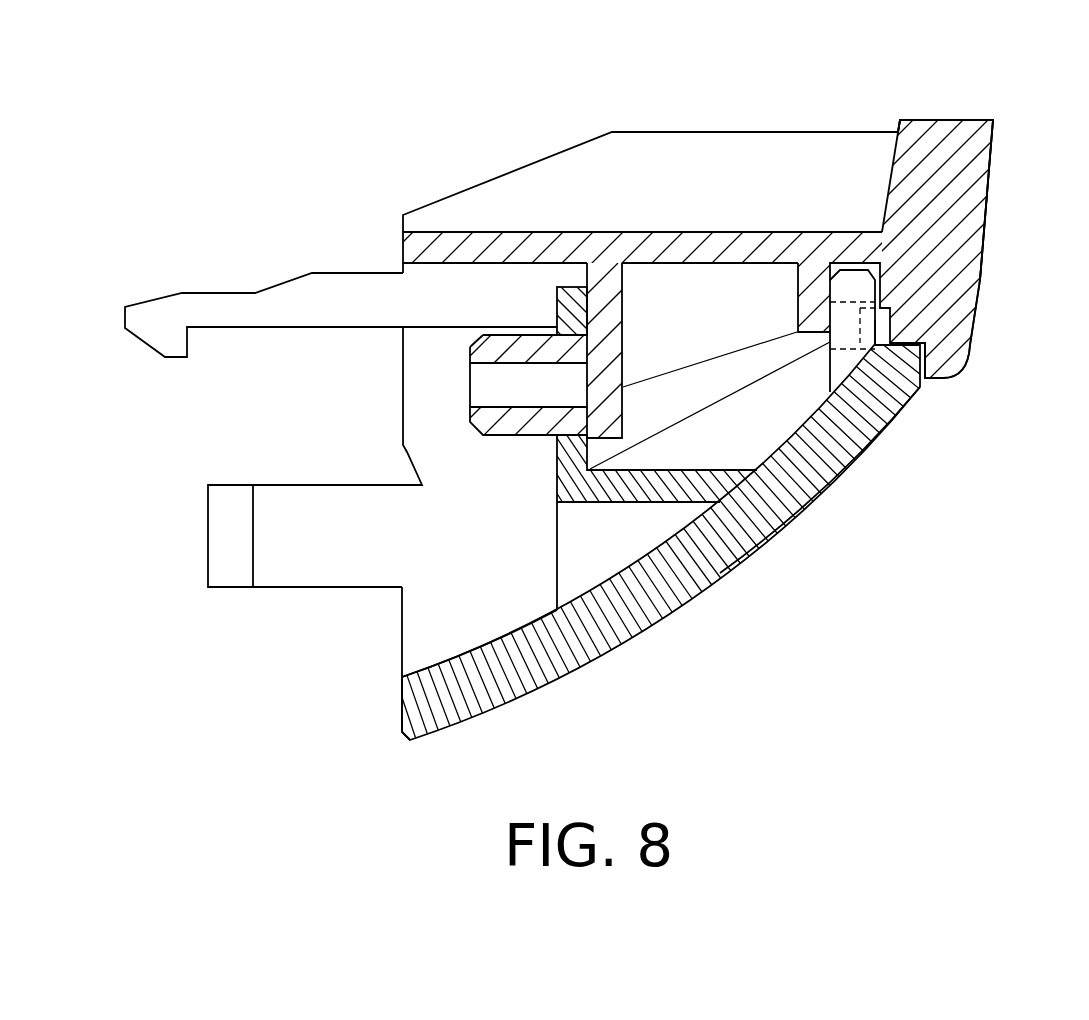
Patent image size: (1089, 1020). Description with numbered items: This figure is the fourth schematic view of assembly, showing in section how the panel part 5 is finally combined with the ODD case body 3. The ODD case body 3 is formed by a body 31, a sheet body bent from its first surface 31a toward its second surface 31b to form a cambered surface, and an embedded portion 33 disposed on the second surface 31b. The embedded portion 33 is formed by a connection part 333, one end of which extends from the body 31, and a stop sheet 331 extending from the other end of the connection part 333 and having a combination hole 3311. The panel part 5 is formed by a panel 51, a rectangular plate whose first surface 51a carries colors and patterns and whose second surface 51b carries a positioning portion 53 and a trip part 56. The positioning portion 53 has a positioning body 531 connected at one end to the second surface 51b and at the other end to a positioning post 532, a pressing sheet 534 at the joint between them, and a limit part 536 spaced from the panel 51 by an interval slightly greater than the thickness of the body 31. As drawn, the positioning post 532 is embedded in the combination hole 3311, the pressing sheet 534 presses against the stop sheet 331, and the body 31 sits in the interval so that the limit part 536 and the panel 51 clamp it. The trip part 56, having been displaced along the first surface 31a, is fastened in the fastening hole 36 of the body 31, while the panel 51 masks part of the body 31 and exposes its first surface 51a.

The panel part 5 is at (999, 188).
The panel 51 is at (940, 257).
The first surface 51a is at (995, 147).
The second surface 51b is at (897, 143).
The positioning body 531 is at (750, 253).
The pressing sheet 534 is at (622, 287).
The limit part 536 is at (806, 290).
The trip part 56 is at (873, 323).
The ODD case body 3 is at (755, 578).
The body 31 is at (588, 637).
The first surface 31a is at (838, 482).
The second surface 31b is at (533, 620).
The fastening hole 36 is at (880, 398).
The embedded portion 33 is at (305, 605).
The stop sheet 331 is at (573, 455).
The connection part 333 is at (580, 555).
The combination hole 3311 is at (536, 334).
The positioning portion 53 is at (488, 328).
The positioning post 532 is at (483, 348).